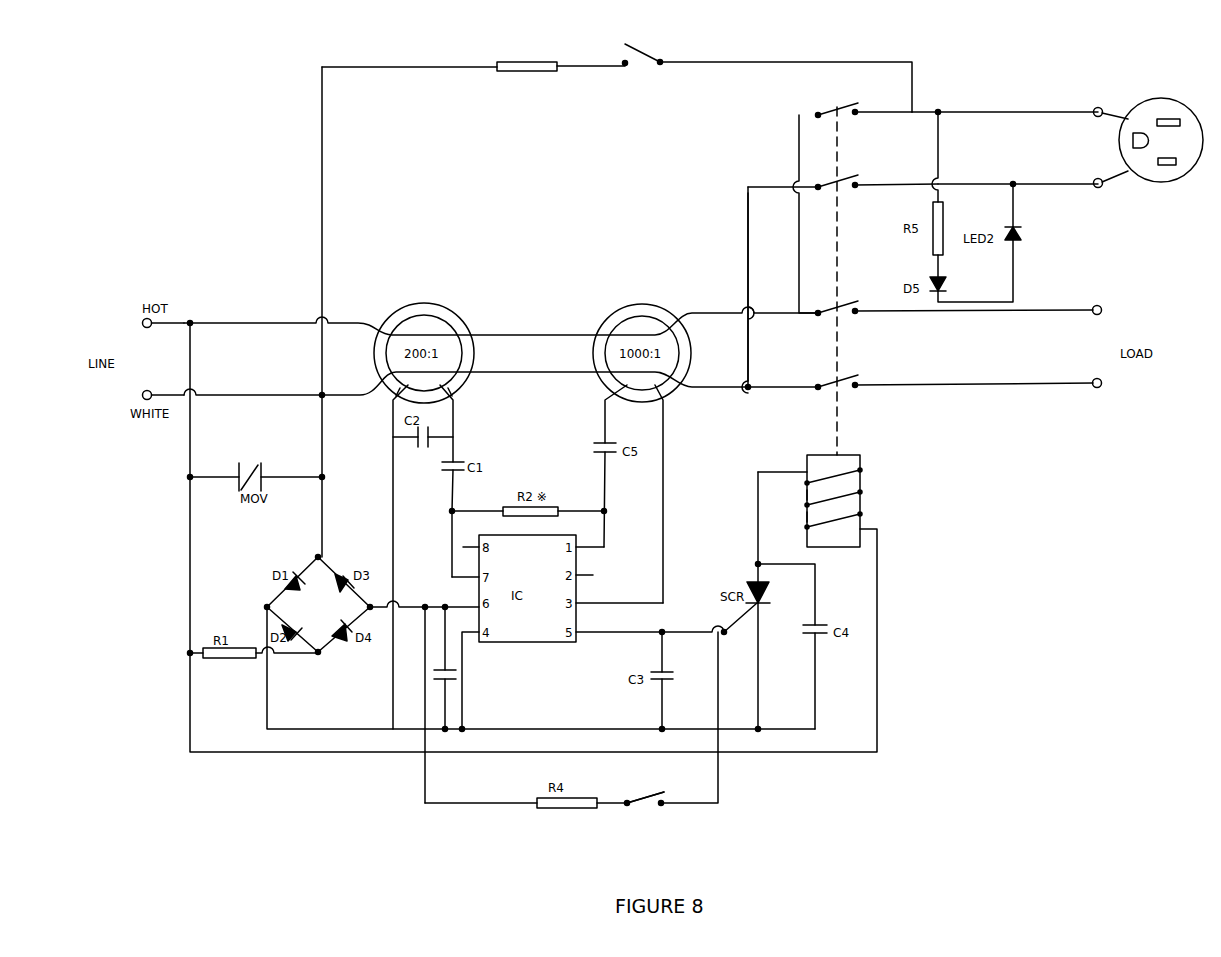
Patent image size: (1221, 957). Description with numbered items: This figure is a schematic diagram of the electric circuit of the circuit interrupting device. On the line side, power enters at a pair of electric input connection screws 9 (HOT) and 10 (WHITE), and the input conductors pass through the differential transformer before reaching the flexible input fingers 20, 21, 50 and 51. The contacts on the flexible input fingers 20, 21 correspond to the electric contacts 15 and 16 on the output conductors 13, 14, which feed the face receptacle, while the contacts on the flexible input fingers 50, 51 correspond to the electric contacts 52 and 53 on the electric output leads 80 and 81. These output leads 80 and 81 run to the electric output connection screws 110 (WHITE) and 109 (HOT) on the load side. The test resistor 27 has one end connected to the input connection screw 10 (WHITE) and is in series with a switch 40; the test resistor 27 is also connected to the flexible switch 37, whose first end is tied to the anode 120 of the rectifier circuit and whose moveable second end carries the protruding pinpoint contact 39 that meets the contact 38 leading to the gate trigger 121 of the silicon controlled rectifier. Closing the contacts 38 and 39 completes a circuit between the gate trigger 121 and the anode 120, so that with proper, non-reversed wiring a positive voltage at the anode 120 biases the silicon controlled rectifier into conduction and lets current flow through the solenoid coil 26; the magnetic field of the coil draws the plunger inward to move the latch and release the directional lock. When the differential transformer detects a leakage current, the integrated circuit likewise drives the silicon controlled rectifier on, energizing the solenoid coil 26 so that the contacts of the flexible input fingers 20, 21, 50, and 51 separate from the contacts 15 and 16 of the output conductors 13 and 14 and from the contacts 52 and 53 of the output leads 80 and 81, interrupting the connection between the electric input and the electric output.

The electric input connection screw (HOT) 9 is at (142, 323).
The electric input connection screw (WHITE) 10 is at (142, 395).
The output conductor 13 is at (970, 112).
The output conductor 14 is at (970, 184).
The electric contact 15 is at (858, 111).
The electric contact 16 is at (858, 185).
The flexible input finger 20 is at (843, 110).
The flexible input finger 21 is at (848, 183).
The solenoid coil 26 is at (855, 462).
The test resistor 27 is at (528, 62).
The flexible switch 37 is at (646, 797).
The contact 38 is at (667, 803).
The protruding pinpoint contact 39 is at (661, 800).
The switch 40 is at (636, 45).
The flexible input finger 50 is at (843, 384).
The flexible input finger 51 is at (843, 309).
The electric contact 52 is at (860, 386).
The electric contact 53 is at (858, 311).
The electric output lead 80 is at (950, 385).
The electric output lead 81 is at (1025, 311).
The electric output connection screw (HOT) 109 is at (1098, 306).
The electric output connection screw (WHITE) 110 is at (1101, 388).
The anode of rectifier circuit 120 is at (428, 605).
The gate trigger of SCR 121 is at (723, 630).